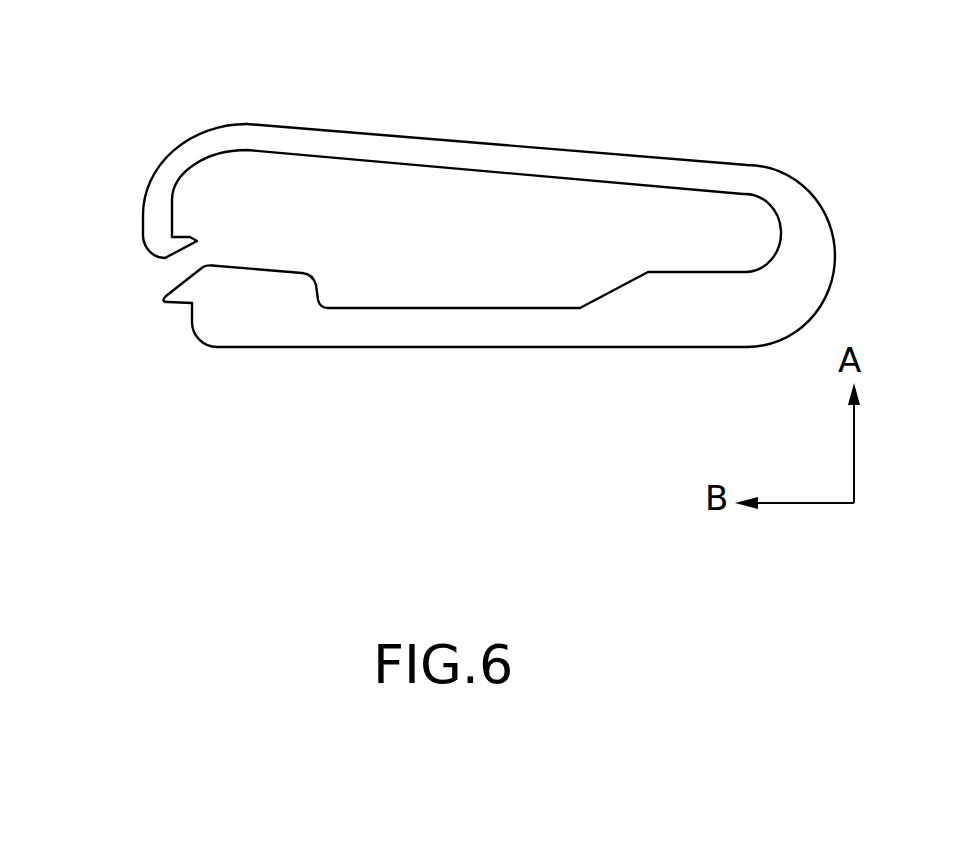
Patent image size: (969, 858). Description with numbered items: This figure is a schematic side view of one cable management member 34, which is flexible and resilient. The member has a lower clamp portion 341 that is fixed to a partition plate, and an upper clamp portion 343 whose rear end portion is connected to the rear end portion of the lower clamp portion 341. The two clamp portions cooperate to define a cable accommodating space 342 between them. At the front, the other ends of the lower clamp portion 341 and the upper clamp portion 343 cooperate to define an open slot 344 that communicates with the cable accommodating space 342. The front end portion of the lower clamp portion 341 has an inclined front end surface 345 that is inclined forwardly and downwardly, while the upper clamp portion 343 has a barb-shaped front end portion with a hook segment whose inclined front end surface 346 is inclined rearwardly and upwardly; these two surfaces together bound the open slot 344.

The cable management member 34 is at (655, 118).
The lower clamp portion 341 is at (455, 336).
The cable accommodating space 342 is at (428, 170).
The upper clamp portion 343 is at (552, 162).
The open slot 344 is at (143, 287).
The inclined front end surface of lower clamp portion 345 is at (167, 300).
The inclined front end surface of hook segment 346 is at (192, 236).